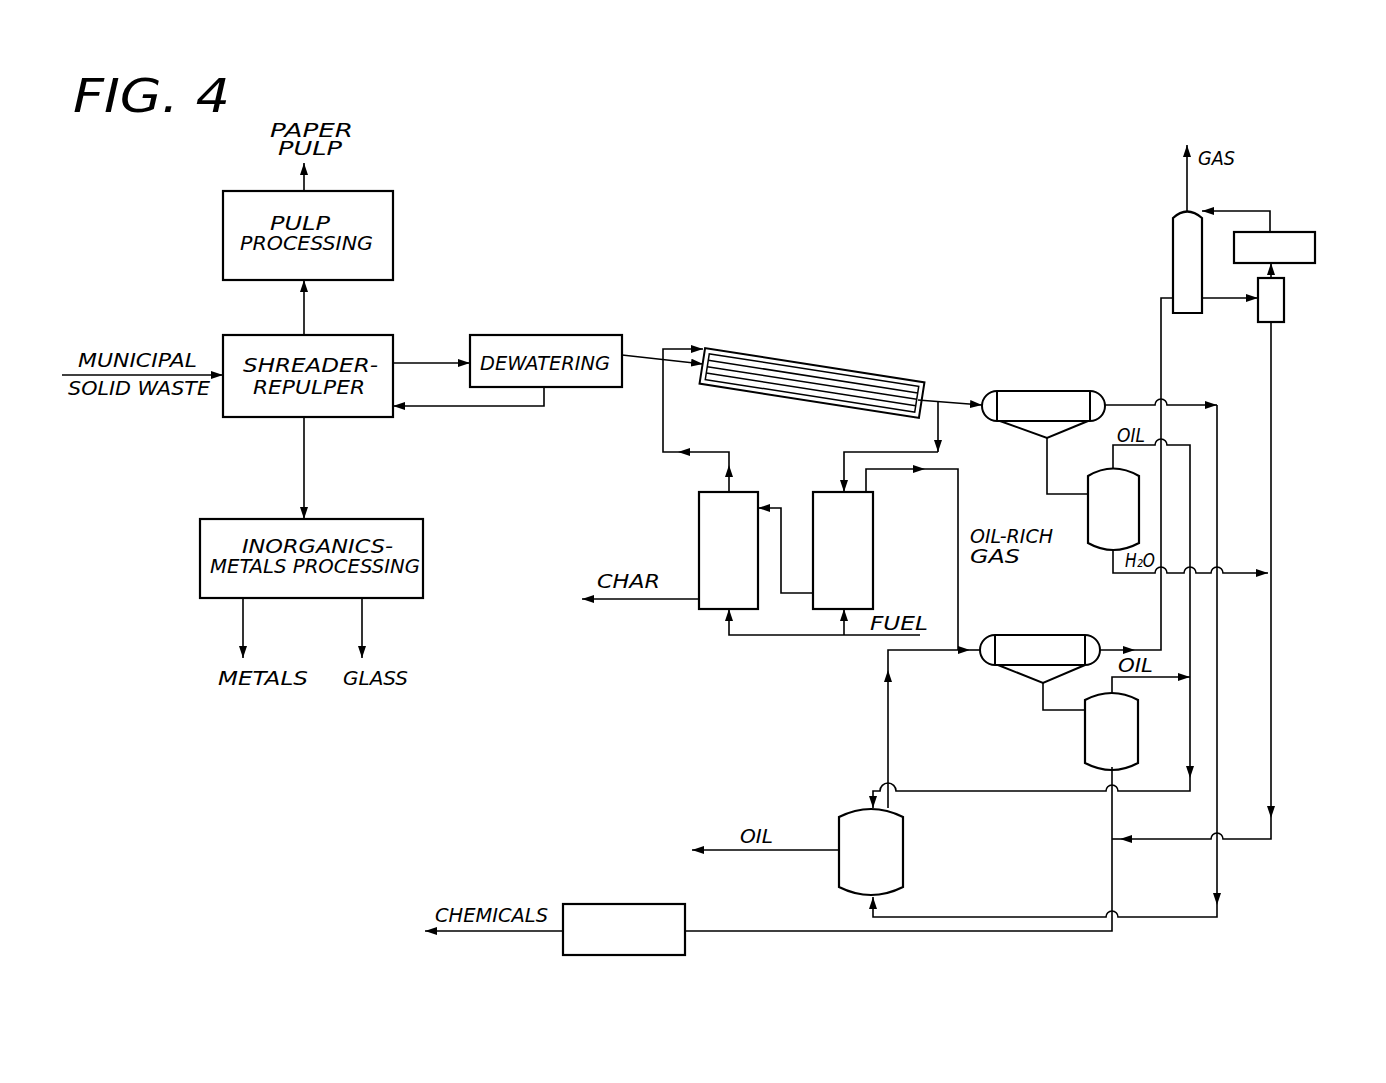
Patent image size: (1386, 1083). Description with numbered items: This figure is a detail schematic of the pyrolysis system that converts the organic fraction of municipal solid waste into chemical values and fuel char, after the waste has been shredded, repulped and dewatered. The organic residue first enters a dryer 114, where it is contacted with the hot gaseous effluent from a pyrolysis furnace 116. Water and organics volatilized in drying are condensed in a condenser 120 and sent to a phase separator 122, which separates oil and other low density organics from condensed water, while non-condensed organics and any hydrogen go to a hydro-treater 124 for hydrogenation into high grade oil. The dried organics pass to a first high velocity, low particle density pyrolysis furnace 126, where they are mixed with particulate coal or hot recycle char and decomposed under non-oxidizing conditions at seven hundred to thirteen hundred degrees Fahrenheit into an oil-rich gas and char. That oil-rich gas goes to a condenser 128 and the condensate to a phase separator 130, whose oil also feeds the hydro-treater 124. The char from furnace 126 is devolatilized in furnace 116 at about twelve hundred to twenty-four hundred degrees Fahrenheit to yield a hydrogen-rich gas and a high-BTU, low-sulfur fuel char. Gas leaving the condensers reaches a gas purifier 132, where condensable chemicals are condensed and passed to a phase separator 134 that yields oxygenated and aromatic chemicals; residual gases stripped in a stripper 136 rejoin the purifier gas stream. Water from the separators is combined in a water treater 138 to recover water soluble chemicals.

The dryer 114 is at (860, 368).
The pyrolysis furnace 116 is at (699, 527).
The condenser 120 is at (1048, 391).
The phase separator 122 is at (1103, 475).
The hydro-treater 124 is at (903, 873).
The first pyrolysis furnace 126 is at (873, 578).
The condenser 128 is at (1018, 635).
The phase separator 130 is at (1138, 725).
The gas purifier 132 is at (1173, 245).
The phase separator 134 is at (1284, 308).
The stripper 136 is at (1316, 246).
The water treater 138 is at (685, 904).